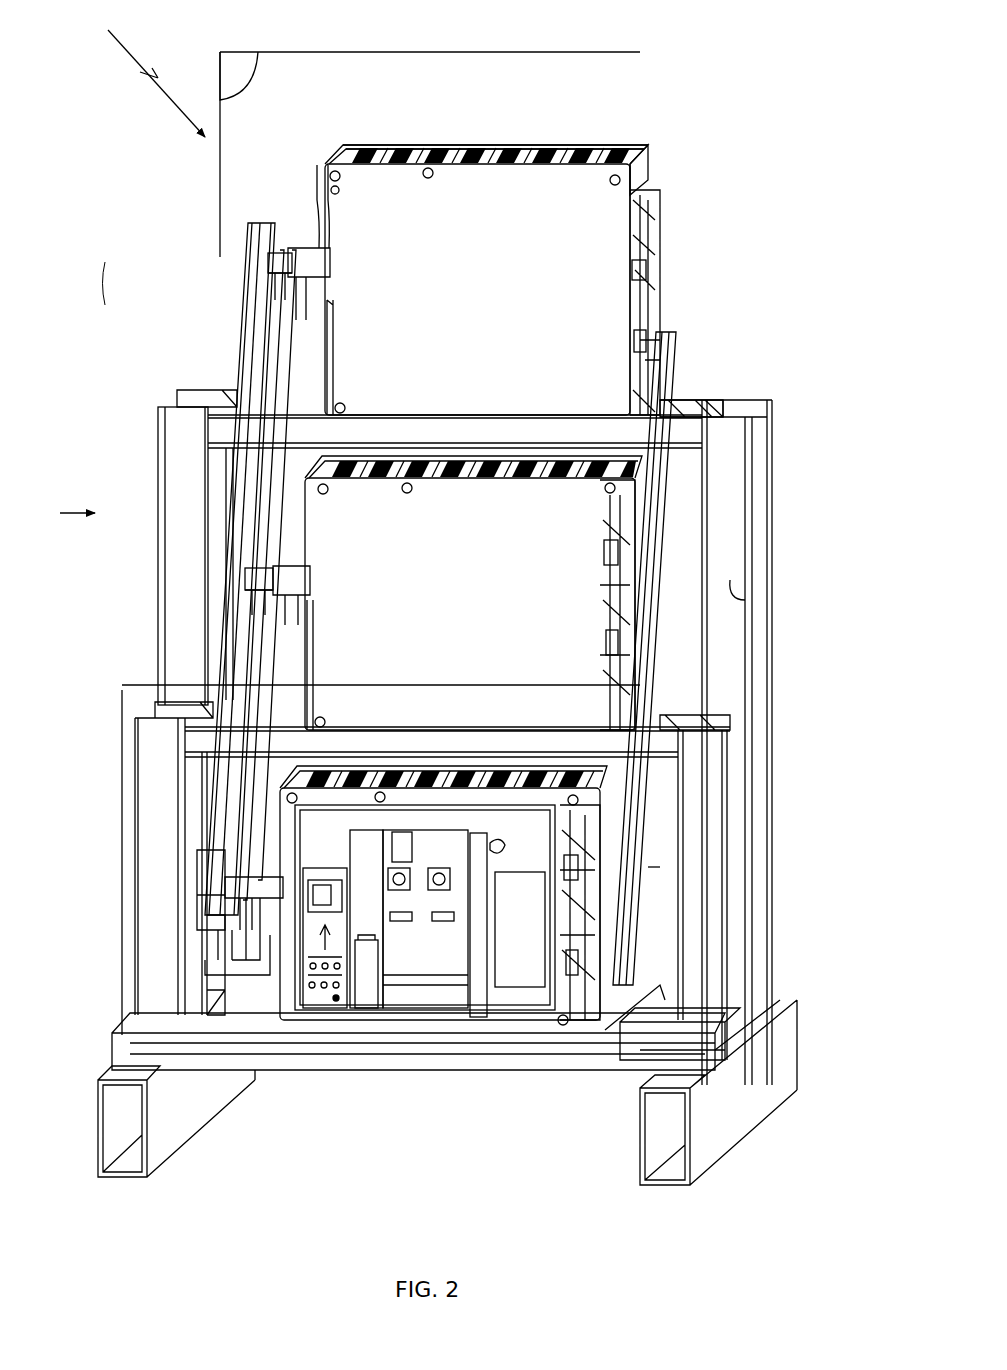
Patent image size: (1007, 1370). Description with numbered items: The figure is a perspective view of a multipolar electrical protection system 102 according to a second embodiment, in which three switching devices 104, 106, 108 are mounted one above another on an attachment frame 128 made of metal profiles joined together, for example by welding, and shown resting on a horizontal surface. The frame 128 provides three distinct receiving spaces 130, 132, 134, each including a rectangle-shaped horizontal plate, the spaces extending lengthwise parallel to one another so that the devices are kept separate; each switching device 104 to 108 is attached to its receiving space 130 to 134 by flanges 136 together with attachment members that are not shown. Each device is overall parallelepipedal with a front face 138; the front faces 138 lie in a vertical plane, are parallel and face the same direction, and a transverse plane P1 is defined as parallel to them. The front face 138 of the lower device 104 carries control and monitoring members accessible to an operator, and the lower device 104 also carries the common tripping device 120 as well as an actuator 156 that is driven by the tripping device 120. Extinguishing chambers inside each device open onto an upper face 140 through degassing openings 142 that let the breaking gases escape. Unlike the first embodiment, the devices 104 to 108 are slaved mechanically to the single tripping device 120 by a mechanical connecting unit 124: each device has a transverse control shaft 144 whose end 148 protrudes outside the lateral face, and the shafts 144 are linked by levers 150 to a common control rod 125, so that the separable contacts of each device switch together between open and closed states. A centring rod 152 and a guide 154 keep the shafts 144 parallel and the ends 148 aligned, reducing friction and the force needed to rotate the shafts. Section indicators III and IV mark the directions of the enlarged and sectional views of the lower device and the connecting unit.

The protection system 102 is at (141, 72).
The switching device 104 is at (573, 825).
The switching device 106 is at (590, 510).
The switching device 108 is at (612, 232).
The tripping device 120 is at (325, 1012).
The mechanical connecting unit 124 is at (86, 283).
The control rod 125 is at (290, 340).
The attachment frame 128 is at (755, 585).
The receiving space 130 is at (692, 1028).
The receiving space 132 is at (667, 703).
The receiving space 134 is at (697, 398).
The flange 136 is at (310, 1040).
The front face 138 is at (642, 205).
The upper face 140 is at (640, 150).
The degassing opening 142 is at (590, 150).
The control shaft 144 is at (317, 248).
The end of control shaft 148 is at (235, 908).
The lever 150 is at (300, 292).
The centring rod 152 is at (242, 360).
The guide 154 is at (672, 343).
The actuator 156 is at (437, 968).
The transverse plane P1 is at (239, 76).
The section IV indicator IV is at (61, 500).
The section III indicator III is at (652, 870).